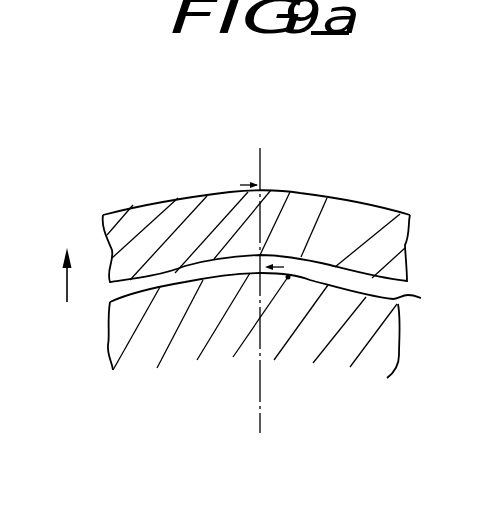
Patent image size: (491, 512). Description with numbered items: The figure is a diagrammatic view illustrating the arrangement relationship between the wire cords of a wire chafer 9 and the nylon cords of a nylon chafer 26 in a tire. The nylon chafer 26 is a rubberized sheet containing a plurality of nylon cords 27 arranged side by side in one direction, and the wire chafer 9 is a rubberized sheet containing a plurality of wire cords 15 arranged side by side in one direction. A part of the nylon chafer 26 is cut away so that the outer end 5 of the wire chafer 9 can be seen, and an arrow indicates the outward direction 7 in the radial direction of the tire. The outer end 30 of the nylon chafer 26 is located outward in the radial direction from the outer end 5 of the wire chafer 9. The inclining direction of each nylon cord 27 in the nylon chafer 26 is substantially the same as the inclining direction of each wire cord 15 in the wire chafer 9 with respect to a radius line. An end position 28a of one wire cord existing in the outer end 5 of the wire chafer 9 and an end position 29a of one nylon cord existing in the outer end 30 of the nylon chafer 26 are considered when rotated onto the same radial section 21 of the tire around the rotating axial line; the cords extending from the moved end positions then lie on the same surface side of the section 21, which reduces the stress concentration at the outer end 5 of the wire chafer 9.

The nylon chafer 26 is at (163, 221).
The outer end of the nylon chafer 30 is at (316, 198).
The nylon cord 27 is at (341, 213).
The end position of one nylon cord 29a is at (241, 185).
The wire chafer 9 is at (352, 340).
The outer end of the wire chafer 5 is at (421, 298).
The wire cord 15 is at (172, 338).
The end position of one wire cord 28a is at (288, 278).
The radial section of the tire 21 is at (260, 403).
The outward direction in the radial direction 7 is at (67, 280).